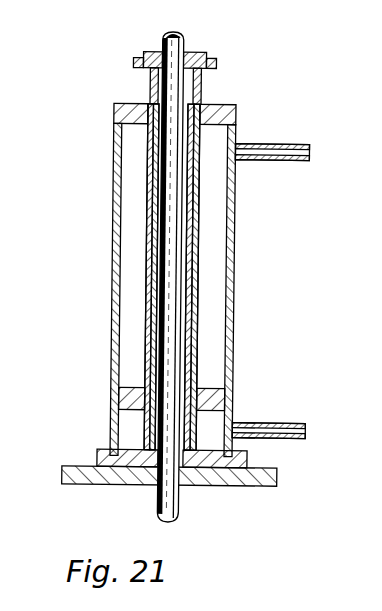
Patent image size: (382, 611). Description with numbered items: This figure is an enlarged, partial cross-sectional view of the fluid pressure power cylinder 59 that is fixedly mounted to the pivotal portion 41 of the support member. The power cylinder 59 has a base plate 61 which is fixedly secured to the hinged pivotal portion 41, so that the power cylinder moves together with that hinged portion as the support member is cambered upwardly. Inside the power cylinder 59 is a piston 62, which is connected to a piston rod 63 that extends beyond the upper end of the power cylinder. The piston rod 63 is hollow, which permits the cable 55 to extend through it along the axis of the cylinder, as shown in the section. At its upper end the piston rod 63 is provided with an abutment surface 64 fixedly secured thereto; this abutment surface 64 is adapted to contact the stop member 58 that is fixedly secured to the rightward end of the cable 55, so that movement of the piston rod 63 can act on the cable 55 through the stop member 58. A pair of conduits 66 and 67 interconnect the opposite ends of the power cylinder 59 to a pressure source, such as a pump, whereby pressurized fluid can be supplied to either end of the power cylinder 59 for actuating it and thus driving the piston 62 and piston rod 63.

The pivotal portion 41 is at (240, 492).
The cable 55 is at (166, 33).
The stop member 58 is at (188, 51).
The fluid pressure power cylinder 59 is at (95, 186).
The base plate 61 is at (97, 452).
The piston 62 is at (119, 396).
The piston rod 63 is at (146, 231).
The abutment surface 64 is at (215, 63).
The conduit 66 is at (284, 428).
The conduit 67 is at (256, 156).